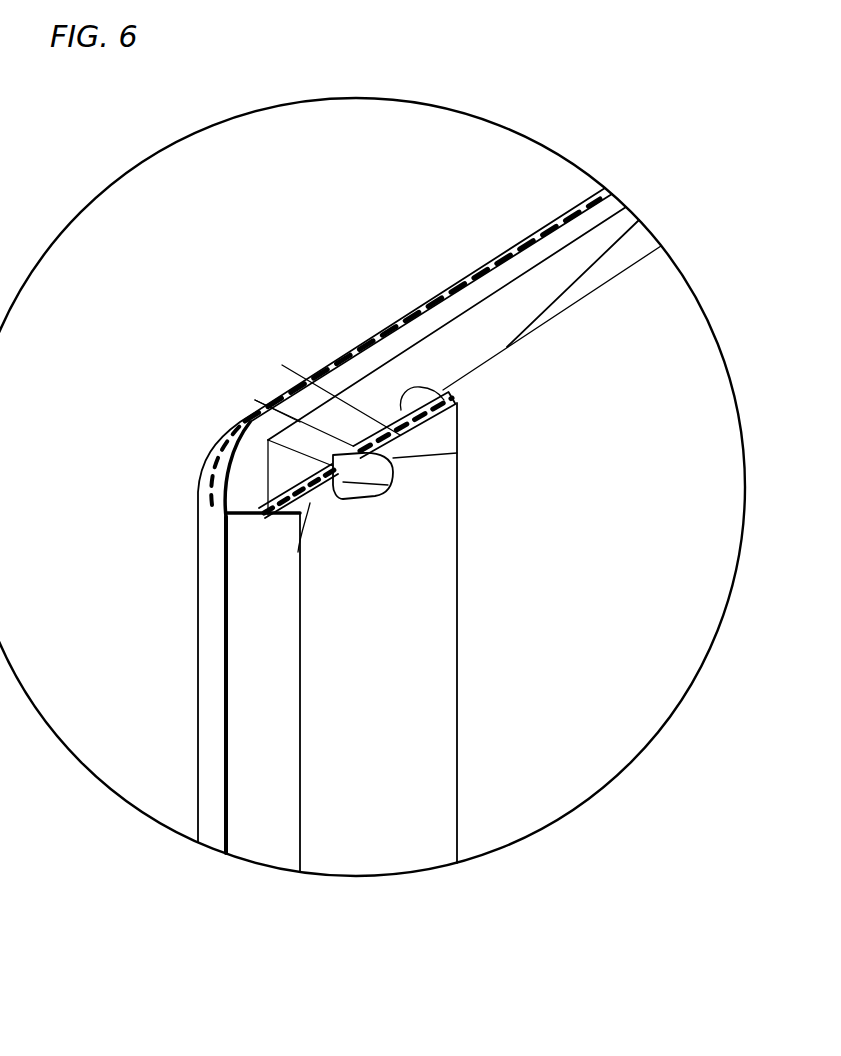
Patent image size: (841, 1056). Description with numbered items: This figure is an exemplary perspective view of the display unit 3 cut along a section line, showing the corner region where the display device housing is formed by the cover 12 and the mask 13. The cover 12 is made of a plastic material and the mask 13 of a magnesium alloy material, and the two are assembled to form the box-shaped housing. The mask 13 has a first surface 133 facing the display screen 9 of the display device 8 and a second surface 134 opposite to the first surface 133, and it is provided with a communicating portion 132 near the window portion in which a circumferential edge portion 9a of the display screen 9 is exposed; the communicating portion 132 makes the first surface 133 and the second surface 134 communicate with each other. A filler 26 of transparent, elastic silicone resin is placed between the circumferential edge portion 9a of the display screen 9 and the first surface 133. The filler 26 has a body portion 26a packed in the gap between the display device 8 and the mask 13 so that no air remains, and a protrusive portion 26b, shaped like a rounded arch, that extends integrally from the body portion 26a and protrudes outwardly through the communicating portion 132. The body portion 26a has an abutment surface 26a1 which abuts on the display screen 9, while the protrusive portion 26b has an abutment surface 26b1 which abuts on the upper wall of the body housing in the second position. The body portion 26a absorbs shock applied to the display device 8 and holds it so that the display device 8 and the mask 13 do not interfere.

The solar cell module 3 is at (308, 270).
The display device 8 is at (490, 335).
The display screen 9 is at (655, 357).
The circumferential edge portion 9a is at (447, 393).
The cover 12 is at (545, 212).
The mask 13 is at (410, 640).
The filler 26 is at (420, 481).
The body portion 26a is at (330, 502).
The abutment surface 26a1 is at (270, 407).
The protrusive portion 26b is at (362, 502).
The abutment surface 26b1 is at (385, 498).
The communicating portion 132 is at (438, 430).
The first surface 133 is at (332, 387).
The second surface 134 is at (298, 550).